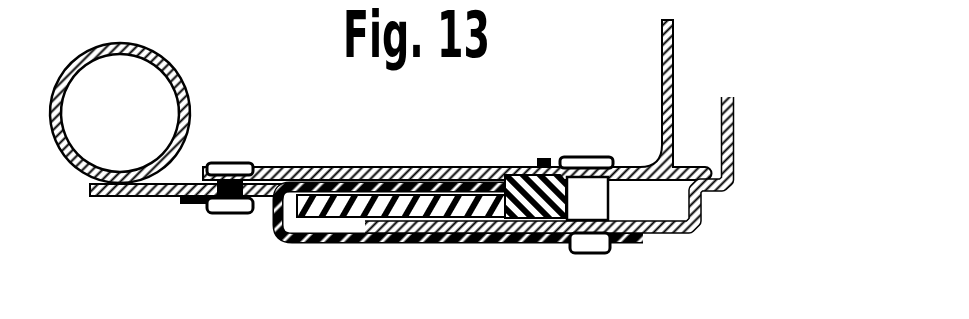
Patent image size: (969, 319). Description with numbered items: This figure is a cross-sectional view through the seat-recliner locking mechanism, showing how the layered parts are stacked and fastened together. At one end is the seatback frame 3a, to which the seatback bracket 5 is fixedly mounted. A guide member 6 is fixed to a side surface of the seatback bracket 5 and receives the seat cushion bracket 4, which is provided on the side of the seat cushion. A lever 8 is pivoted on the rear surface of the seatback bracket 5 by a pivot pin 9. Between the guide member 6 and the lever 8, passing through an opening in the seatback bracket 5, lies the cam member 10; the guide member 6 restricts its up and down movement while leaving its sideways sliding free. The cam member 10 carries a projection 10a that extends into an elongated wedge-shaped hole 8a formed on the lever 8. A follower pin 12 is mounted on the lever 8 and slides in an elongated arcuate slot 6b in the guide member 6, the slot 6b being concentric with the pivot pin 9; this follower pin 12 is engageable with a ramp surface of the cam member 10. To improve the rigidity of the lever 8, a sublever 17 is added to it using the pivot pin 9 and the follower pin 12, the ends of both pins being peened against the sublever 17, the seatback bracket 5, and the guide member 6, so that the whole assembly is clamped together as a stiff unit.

The seatback frame 3a is at (186, 84).
The seatback bracket 5 is at (267, 218).
The lever 8 is at (421, 167).
The elongated wedge-shaped hole 8a is at (511, 168).
The guide member 6 is at (392, 234).
The elongated arcuate slot 6b is at (598, 242).
The sublever 17 is at (468, 246).
The seat cushion bracket 4 is at (318, 204).
The cam member 10 is at (535, 245).
The projection 10a is at (545, 158).
The follower pin 12 is at (588, 190).
The pivot pin 9 is at (242, 163).